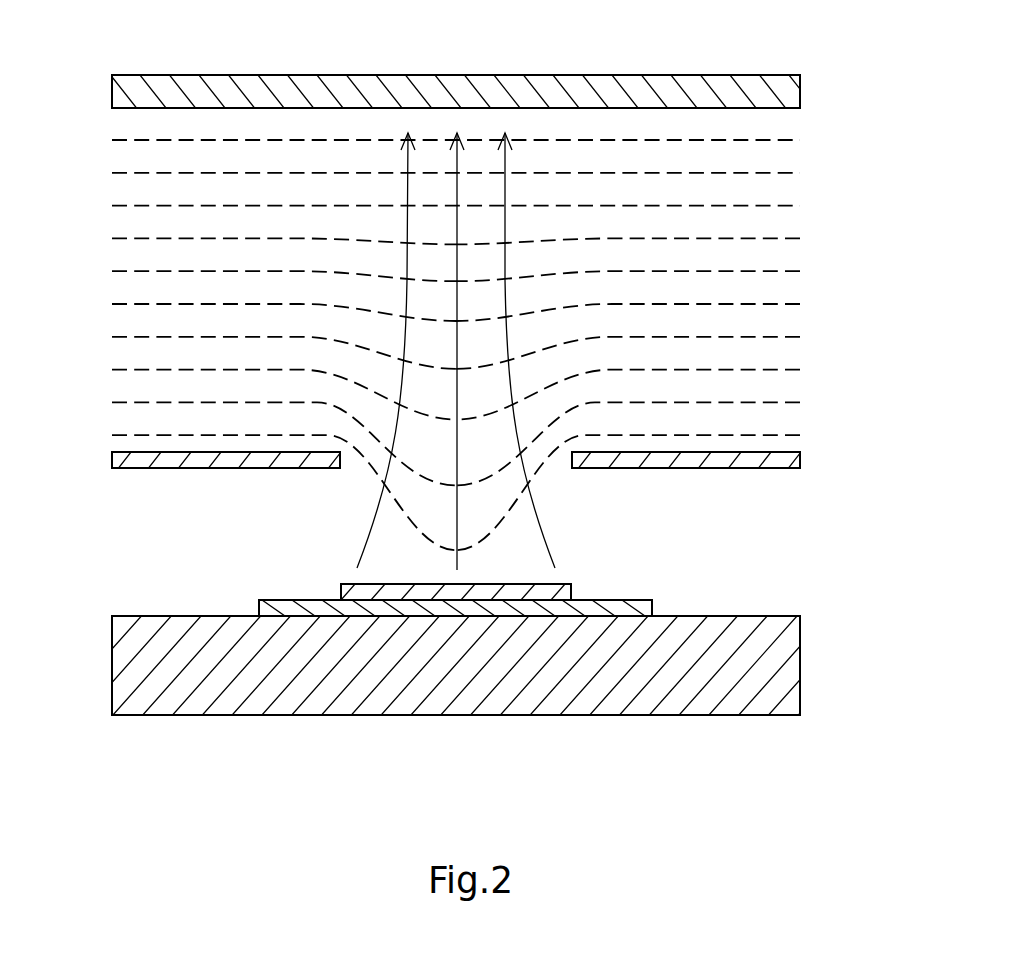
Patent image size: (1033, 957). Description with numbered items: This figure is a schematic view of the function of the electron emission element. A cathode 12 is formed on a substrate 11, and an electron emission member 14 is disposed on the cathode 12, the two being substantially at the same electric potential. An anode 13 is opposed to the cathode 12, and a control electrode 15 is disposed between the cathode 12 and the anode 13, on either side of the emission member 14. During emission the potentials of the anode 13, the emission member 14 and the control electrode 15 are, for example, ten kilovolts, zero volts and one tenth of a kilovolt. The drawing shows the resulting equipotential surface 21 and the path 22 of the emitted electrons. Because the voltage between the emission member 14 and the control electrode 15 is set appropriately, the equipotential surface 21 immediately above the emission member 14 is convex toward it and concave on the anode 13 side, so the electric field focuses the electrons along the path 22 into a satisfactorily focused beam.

The substrate 11 is at (803, 683).
The cathode 12 is at (538, 610).
The anode 13 is at (803, 100).
The electron emission member 14 is at (432, 593).
The control electrode 15 is at (112, 458).
The equipotential surface 21 is at (104, 140).
The path of emitted electrons 22 is at (402, 133).